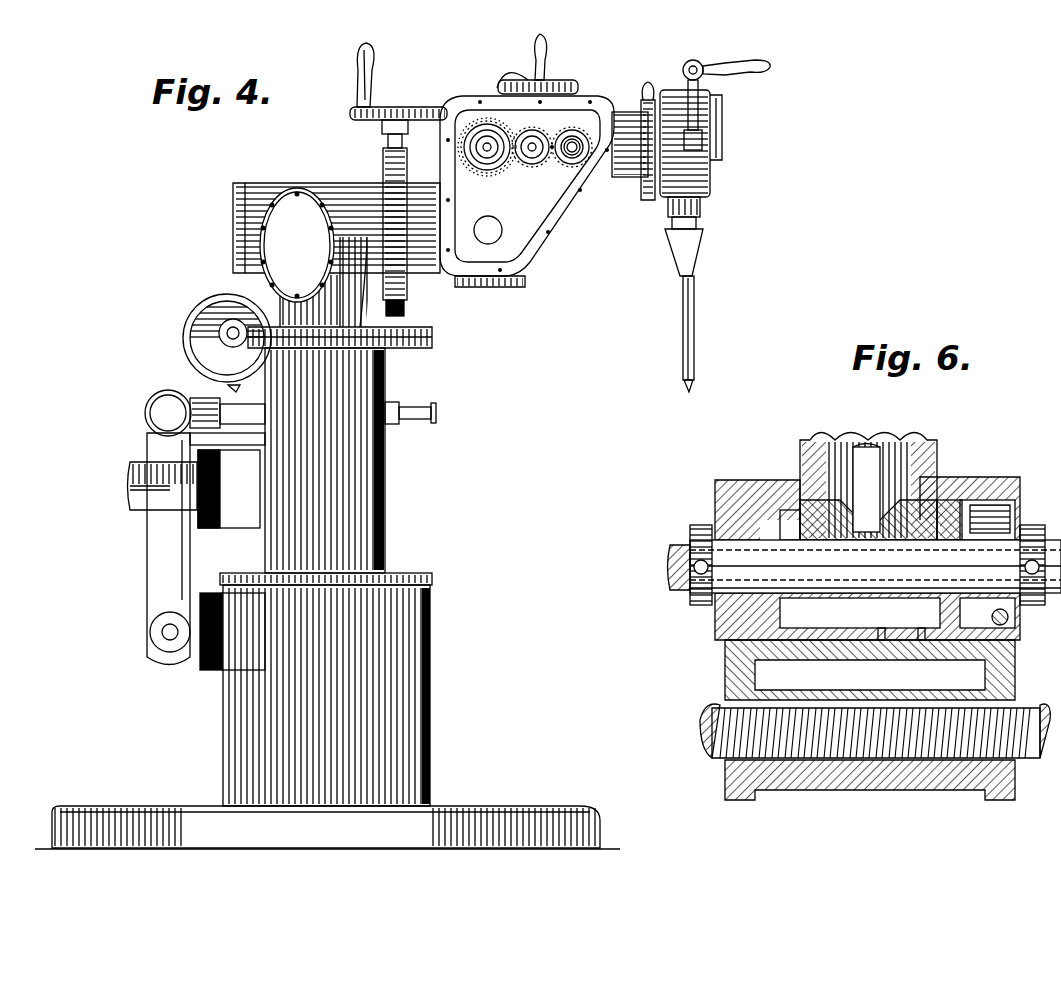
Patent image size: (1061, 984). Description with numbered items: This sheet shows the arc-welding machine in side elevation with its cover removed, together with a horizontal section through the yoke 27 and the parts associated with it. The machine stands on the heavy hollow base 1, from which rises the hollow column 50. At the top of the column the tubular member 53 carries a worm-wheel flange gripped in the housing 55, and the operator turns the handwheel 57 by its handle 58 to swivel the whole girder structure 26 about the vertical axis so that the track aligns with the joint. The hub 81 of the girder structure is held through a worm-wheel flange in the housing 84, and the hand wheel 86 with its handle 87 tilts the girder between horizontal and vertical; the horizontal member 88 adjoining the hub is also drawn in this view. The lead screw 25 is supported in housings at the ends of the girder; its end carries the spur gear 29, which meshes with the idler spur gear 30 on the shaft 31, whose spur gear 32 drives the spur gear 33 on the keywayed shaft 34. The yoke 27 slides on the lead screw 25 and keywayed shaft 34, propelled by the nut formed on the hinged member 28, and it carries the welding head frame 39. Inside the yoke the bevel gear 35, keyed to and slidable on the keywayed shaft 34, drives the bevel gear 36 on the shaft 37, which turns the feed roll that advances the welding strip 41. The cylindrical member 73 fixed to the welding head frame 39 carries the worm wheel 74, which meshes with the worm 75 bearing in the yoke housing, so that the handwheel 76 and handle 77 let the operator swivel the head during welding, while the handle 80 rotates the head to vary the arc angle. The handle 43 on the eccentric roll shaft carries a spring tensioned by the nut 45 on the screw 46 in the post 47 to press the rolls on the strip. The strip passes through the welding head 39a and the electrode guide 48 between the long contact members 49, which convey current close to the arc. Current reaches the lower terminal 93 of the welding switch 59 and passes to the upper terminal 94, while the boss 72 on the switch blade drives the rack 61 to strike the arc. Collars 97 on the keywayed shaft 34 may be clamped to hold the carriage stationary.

In FIG. 4, the hollow base 1 is at (430, 690).
In FIG. 4, the hollow column 50 is at (388, 486).
In FIG. 4, the housing 55 is at (432, 335).
In FIG. 4, the rack 61 is at (438, 412).
In FIG. 4, the horizontal cylinder housing 88 is at (358, 188).
In FIG. 4, the hand wheel 86 is at (400, 112).
In FIG. 4, the handle 87 is at (374, 68).
In FIG. 4, the housing 84 is at (385, 140).
In FIG. 4, the tubular member 53 is at (405, 306).
In FIG. 4, the girder structure 26 is at (445, 170).
In FIG. 4, the hub 81 is at (427, 230).
In FIG. 4, the spur gear 29 is at (474, 170).
In FIG. 4, the idler spur gear 30 is at (520, 135).
In FIG. 4, the shaft 31 is at (532, 152).
In FIG. 4, the spur gear 32 is at (555, 165).
In FIG. 4, the spur gear 33 is at (576, 130).
In FIG. 4, the keywayed shaft 34 is at (578, 155).
In FIG. 6, the keywayed shaft 34 is at (865, 566).
In FIG. 4, the handwheel 76 is at (572, 84).
In FIG. 4, the handle 77 is at (544, 42).
In FIG. 4, the hinged member 28 is at (517, 72).
In FIG. 4, the welding head frame 39 is at (630, 115).
In FIG. 6, the welding head frame 39 is at (937, 452).
In FIG. 4, the handle 80 is at (642, 170).
In FIG. 4, the welding head 39a is at (710, 180).
In FIG. 4, the handle 43 is at (724, 97).
In FIG. 4, the post 47 is at (720, 122).
In FIG. 4, the nut 45 is at (693, 60).
In FIG. 4, the screw 46 is at (706, 66).
In FIG. 4, the electrode guide 48 is at (700, 242).
In FIG. 4, the electrical contact members 49 is at (703, 300).
In FIG. 4, the welding strip 41 is at (689, 392).
In FIG. 4, the handwheel 57 is at (195, 305).
In FIG. 4, the handle 58 is at (220, 385).
In FIG. 4, the boss 72 is at (160, 392).
In FIG. 4, the welding switch 59 is at (147, 556).
In FIG. 4, the lower terminal 93 is at (192, 660).
In FIG. 4, the upper terminal 94 is at (190, 496).
In FIG. 6, the yoke 27 is at (740, 478).
In FIG. 6, the shaft 37 is at (868, 445).
In FIG. 6, the bevel gear 35 is at (800, 515).
In FIG. 6, the bevel gear 36 is at (958, 480).
In FIG. 6, the worm wheel 74 is at (1005, 525).
In FIG. 6, the collars 97 is at (690, 600).
In FIG. 6, the worm 75 is at (1010, 625).
In FIG. 6, the cylindrical member 73 is at (900, 640).
In FIG. 6, the lead screw 25 is at (1040, 708).